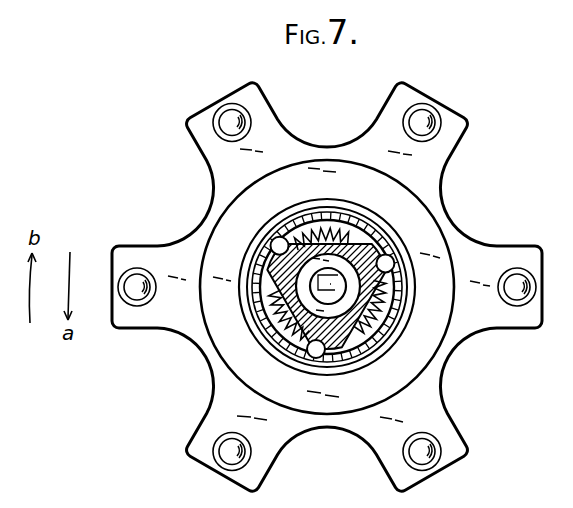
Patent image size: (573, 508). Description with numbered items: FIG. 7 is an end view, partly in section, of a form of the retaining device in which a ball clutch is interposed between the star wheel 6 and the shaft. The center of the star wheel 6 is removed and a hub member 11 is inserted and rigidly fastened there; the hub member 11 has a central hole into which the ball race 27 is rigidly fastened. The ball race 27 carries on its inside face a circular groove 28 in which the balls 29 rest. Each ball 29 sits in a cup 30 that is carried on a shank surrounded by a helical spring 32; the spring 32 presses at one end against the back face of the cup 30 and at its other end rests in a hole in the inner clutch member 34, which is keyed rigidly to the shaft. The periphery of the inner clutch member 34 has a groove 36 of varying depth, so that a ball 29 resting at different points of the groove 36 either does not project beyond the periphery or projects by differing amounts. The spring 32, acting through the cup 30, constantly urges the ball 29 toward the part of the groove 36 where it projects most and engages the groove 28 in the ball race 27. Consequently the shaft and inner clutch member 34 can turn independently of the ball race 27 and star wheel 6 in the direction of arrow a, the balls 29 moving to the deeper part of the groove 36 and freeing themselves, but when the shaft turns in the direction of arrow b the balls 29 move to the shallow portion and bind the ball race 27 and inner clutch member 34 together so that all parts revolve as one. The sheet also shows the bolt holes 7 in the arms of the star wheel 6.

The star wheel 6 is at (425, 389).
The bolt hole 7 is at (437, 466).
The hub member 11 is at (327, 287).
The ball race 27 is at (390, 236).
The circular groove 28 is at (383, 240).
The balls 29 is at (271, 243).
The cup 30 is at (396, 268).
The helical spring 32 is at (410, 297).
The inner clutch member 34 is at (352, 360).
The groove 36 is at (320, 228).